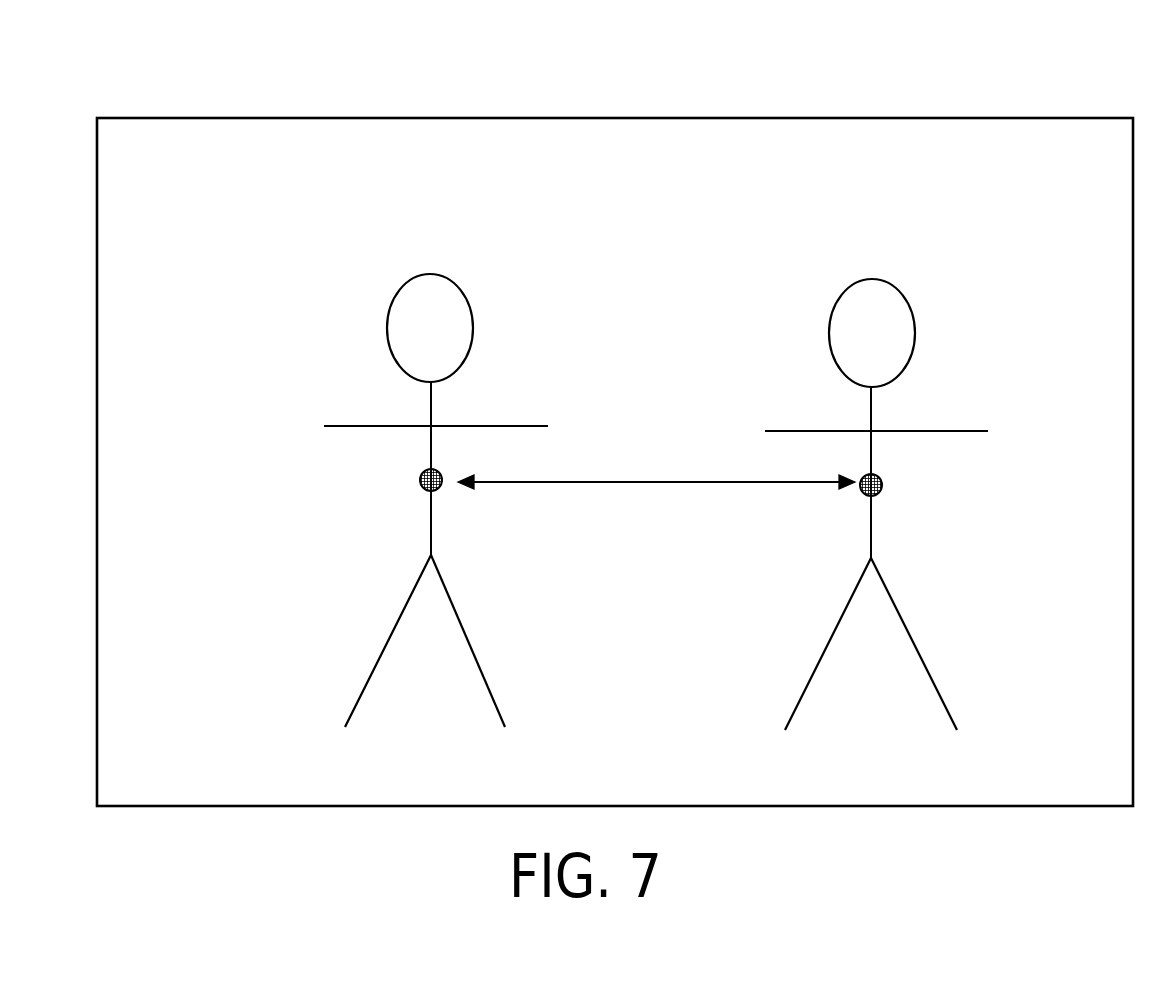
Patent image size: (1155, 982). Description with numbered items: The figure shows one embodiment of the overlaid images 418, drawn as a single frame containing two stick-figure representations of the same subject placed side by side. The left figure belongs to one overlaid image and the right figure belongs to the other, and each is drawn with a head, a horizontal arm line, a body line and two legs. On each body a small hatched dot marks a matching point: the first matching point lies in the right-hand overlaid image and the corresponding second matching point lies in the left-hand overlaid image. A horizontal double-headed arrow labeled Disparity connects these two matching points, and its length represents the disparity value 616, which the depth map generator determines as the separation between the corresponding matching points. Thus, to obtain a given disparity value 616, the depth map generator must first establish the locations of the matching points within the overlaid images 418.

The overlaid images 418 is at (308, 118).
The disparity value 616 is at (633, 490).